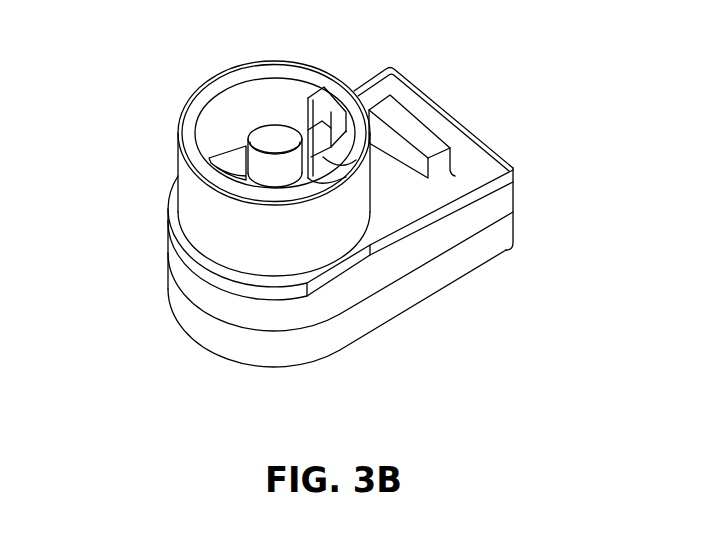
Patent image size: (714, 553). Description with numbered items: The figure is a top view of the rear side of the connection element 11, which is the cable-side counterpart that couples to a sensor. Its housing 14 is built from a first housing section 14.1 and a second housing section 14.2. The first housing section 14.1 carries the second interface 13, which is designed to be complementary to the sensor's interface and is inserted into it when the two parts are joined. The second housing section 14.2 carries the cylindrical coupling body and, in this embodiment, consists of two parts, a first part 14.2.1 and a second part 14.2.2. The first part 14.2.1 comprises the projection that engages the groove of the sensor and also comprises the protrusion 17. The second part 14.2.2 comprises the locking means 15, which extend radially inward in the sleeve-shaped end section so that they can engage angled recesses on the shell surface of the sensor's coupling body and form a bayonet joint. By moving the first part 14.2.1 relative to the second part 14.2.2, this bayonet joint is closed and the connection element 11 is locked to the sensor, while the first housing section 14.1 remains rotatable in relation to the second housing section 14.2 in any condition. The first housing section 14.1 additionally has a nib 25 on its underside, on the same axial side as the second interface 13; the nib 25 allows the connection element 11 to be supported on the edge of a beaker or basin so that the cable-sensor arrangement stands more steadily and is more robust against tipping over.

The connection element 11 is at (323, 205).
The second interface 13 is at (274, 134).
The housing 14 is at (385, 215).
The first housing section 14.1 is at (457, 268).
The second housing section 14.2 is at (279, 205).
The first part of second housing section 14.2.1 is at (190, 259).
The second part of second housing section 14.2.2 is at (190, 216).
The locking means 15 is at (323, 122).
The protrusion 17 is at (323, 157).
The nib 25 is at (418, 130).